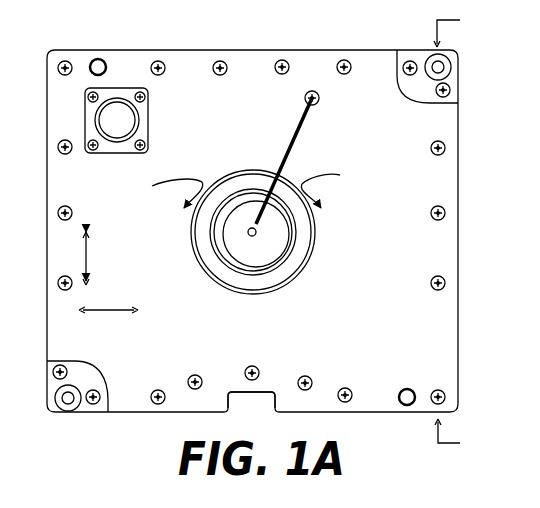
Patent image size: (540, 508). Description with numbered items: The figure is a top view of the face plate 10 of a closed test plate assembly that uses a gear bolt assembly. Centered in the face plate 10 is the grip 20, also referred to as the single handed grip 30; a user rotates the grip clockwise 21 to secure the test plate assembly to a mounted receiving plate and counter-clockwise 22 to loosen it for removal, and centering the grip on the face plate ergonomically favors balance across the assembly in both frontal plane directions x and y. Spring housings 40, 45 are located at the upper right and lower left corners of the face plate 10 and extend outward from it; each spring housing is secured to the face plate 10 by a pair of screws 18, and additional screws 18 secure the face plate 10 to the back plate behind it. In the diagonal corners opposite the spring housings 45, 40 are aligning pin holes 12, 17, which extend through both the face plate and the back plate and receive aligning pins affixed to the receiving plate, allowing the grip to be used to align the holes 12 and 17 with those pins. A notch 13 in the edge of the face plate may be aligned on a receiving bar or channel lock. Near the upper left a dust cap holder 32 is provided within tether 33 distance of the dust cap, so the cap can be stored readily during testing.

The face plate 10 is at (395, 346).
The aligning pin hole 12 is at (407, 406).
The notch 13 is at (273, 389).
The aligning pin hole 17 is at (96, 59).
The screws 18 is at (97, 406).
The grip 20 is at (312, 253).
The clockwise rotation 21 is at (339, 190).
The counter-clockwise rotation 22 is at (165, 190).
The single handed grip 30 is at (237, 252).
The dust cap holder 32 is at (110, 113).
The tether 33 is at (290, 135).
The spring housing 40 is at (453, 78).
The spring housing 45 is at (60, 408).